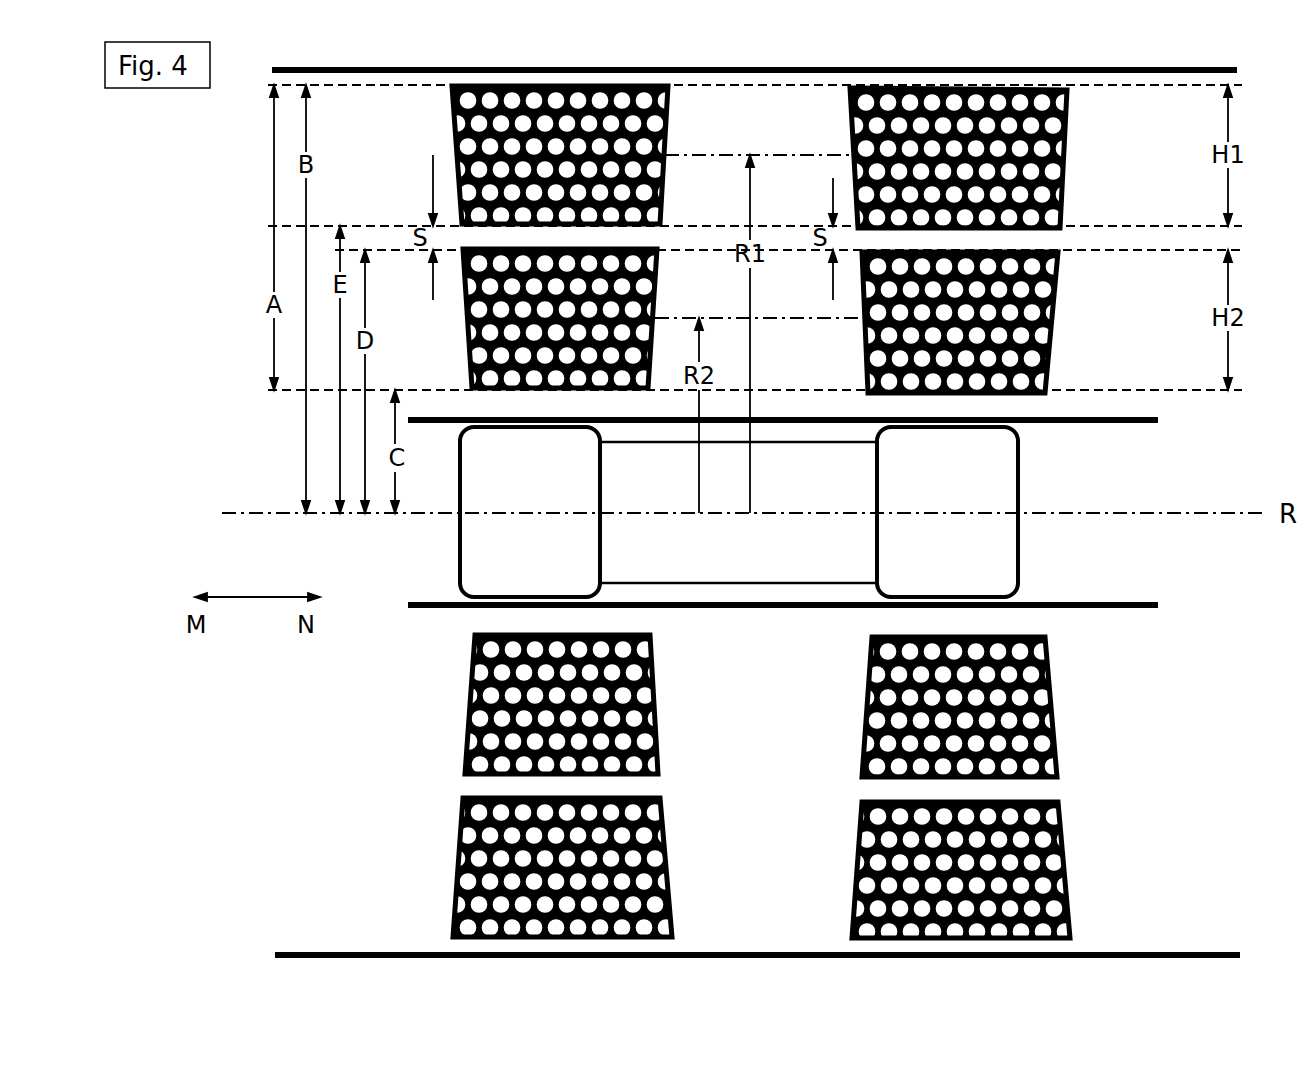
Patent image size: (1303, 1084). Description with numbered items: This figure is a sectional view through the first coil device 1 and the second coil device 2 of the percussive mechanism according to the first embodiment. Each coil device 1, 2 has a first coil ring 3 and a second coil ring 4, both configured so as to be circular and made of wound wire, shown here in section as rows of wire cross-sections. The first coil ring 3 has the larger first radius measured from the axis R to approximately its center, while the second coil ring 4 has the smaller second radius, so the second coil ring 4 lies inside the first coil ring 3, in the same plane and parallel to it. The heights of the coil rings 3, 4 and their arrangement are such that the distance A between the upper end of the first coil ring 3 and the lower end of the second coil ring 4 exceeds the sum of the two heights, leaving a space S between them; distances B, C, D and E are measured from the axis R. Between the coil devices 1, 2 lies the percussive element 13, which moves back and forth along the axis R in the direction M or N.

The first coil device 1 is at (404, 771).
The second coil device 2 is at (1110, 768).
The first coil ring 3 is at (668, 868).
The second coil ring 4 is at (655, 705).
The percussive element 13 is at (815, 560).